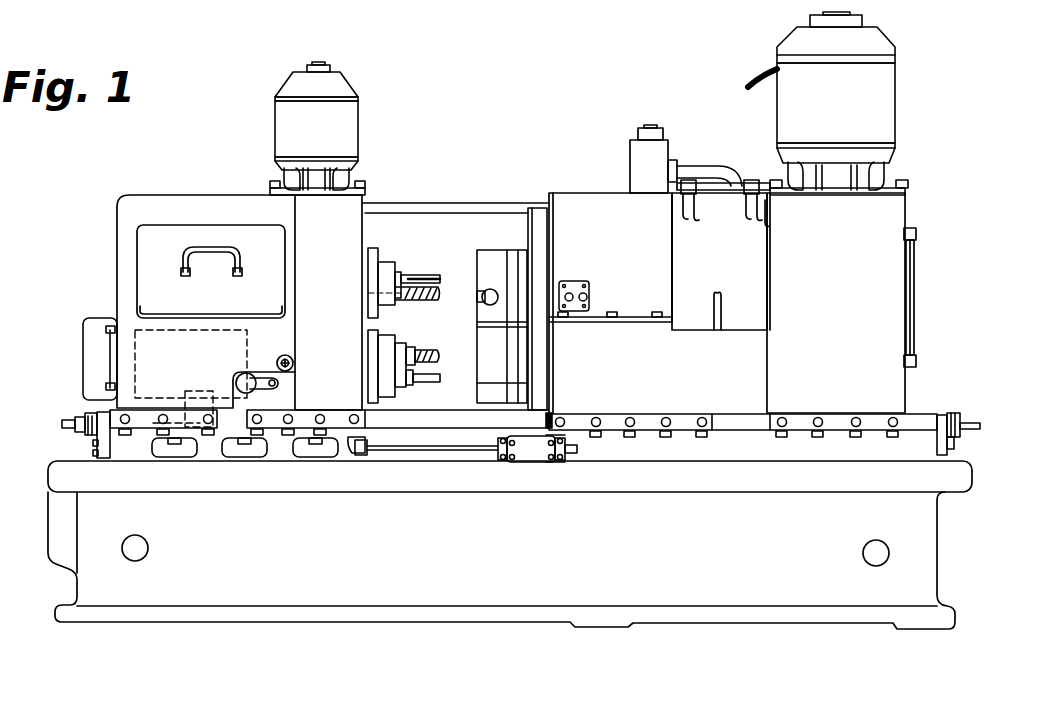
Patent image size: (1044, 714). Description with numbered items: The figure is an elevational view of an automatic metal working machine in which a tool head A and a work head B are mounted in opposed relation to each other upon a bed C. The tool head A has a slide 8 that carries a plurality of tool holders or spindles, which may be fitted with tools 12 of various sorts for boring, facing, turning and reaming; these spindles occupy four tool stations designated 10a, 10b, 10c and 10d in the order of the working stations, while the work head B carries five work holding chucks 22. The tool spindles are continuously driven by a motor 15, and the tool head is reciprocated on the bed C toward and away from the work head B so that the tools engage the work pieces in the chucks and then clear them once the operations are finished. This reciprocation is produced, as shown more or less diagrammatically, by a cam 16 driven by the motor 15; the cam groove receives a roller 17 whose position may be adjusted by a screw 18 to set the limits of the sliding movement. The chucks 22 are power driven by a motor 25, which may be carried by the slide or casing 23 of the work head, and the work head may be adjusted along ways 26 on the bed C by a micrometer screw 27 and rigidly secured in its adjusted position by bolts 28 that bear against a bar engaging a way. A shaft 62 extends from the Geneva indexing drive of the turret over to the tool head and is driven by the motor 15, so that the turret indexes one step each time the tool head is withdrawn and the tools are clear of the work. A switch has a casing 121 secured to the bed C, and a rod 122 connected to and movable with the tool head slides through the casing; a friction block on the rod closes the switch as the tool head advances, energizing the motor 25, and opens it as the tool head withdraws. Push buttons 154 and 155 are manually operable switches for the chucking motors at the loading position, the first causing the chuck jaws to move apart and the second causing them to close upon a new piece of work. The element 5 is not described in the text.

The tool head A is at (222, 244).
The work head B is at (745, 212).
The bed C is at (621, 614).
The bracket 5 is at (548, 461).
The slide 8 is at (116, 256).
The first tool station 10a is at (407, 348).
The second tool station 10b is at (407, 385).
The third tool station 10c is at (381, 268).
The fourth tool station 10d is at (394, 278).
The tools 12 is at (431, 351).
The motor 15 is at (317, 128).
The cam 16 is at (136, 385).
The roller 17 is at (197, 392).
The screw 18 is at (75, 424).
The work holding chucks 22 is at (484, 252).
The slide or casing 23 is at (841, 303).
The motor 25 is at (839, 103).
The ways 26 is at (755, 432).
The micrometer screw 27 is at (950, 410).
The bolts 28 is at (817, 416).
The shaft 62 is at (455, 284).
The casing 121 is at (537, 470).
The rod 122 is at (478, 453).
The push button 154 is at (568, 294).
The push button 155 is at (585, 297).